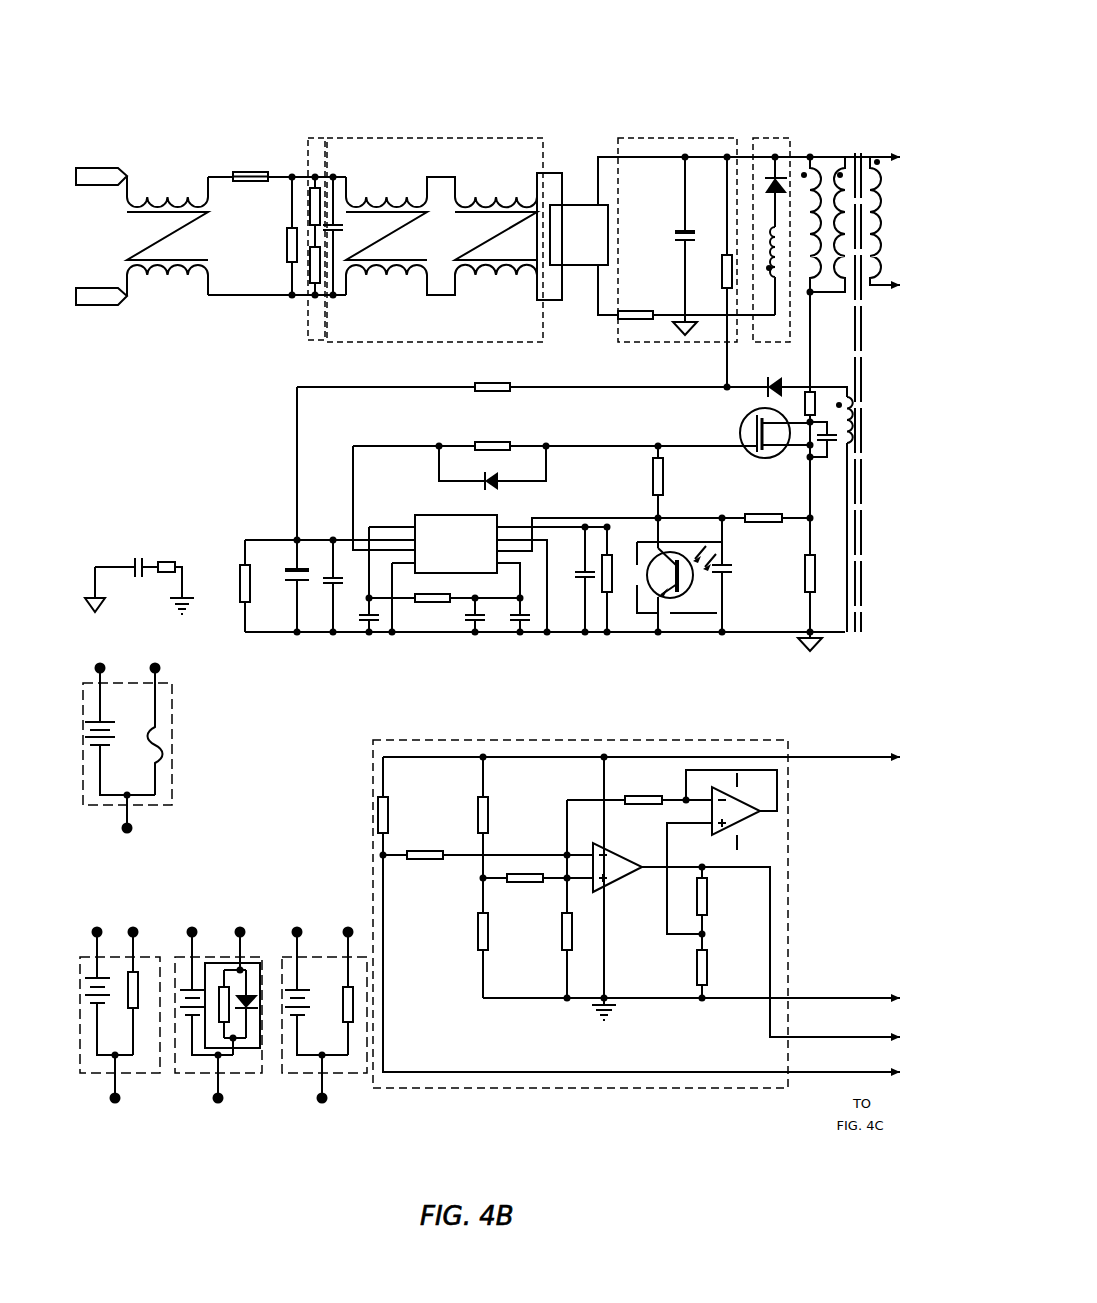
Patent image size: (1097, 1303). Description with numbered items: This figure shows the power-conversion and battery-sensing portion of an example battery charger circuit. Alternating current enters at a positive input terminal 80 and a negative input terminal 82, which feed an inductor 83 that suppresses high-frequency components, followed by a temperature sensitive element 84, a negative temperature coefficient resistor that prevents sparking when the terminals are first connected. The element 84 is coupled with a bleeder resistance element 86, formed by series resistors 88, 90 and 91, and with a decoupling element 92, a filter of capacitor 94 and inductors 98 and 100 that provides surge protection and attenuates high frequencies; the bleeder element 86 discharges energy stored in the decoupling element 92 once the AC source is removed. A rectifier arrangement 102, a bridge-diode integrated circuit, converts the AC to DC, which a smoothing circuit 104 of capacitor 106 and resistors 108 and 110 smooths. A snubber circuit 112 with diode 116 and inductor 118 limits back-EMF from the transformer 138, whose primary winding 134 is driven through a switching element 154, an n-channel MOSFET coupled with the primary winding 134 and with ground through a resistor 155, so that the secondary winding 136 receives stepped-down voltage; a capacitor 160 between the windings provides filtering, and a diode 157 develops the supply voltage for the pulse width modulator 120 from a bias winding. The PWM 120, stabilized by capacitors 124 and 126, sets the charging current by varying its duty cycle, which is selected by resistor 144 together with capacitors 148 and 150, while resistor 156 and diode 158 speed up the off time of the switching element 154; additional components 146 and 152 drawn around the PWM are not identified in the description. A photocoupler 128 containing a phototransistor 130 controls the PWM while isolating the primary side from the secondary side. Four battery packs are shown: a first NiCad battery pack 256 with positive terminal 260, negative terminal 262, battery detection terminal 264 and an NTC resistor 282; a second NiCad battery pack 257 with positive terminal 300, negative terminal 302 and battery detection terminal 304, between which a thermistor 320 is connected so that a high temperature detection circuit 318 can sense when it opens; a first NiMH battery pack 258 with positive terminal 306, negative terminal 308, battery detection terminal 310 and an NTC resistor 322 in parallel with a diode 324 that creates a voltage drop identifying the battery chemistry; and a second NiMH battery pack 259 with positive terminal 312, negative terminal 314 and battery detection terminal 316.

The positive input terminal 80 is at (100, 168).
The negative input terminal 82 is at (100, 288).
The inductor 83 is at (178, 197).
The temperature sensitive element 84 is at (250, 172).
The bleeder resistance element 86 is at (315, 138).
The resistor 88 is at (310, 205).
The resistor 90 is at (310, 272).
The resistor 91 is at (287, 245).
The decoupling element 92 is at (444, 208).
The capacitor 94 is at (343, 232).
The inductor 98 is at (392, 197).
The inductor 100 is at (510, 197).
The rectifier arrangement 102 is at (580, 205).
The smoothing circuit 104 is at (670, 231).
The capacitor 106 is at (672, 232).
The resistor 108 is at (722, 265).
The resistor 110 is at (637, 311).
The snubber circuit 112 is at (736, 204).
The diode 116 is at (771, 178).
The inductor 118 is at (770, 250).
The pulse width modulator 120 is at (420, 515).
The capacitor 124 is at (295, 568).
The capacitor 126 is at (330, 585).
The photocoupler 128 is at (722, 553).
The phototransistor 130 is at (668, 550).
The primary winding 134 is at (810, 156).
The secondary winding 136 is at (877, 156).
The transformer 138 is at (855, 156).
The resistor 144 is at (432, 602).
The resistor 146 is at (612, 565).
The capacitor 148 is at (366, 620).
The capacitor 150 is at (520, 620).
The capacitor 152 is at (590, 580).
The switching element 154 is at (740, 433).
The resistor 155 is at (805, 575).
The resistor 156 is at (492, 442).
The diode 157 is at (786, 385).
The diode 158 is at (500, 483).
The capacitor 160 is at (135, 560).
The first NiCad battery pack 256 is at (100, 1033).
The second NiCad battery pack 257 is at (132, 745).
The first NiMH battery pack 258 is at (225, 1023).
The second NiMH battery pack 259 is at (348, 1012).
The positive terminal 260 is at (95, 929).
The negative terminal 262 is at (110, 1102).
The battery detection terminal 264 is at (135, 929).
The NTC resistor 282 is at (128, 1000).
The positive terminal 300 is at (97, 665).
The negative terminal 302 is at (122, 826).
The battery detection terminal 304 is at (154, 663).
The positive terminal 306 is at (192, 928).
The negative terminal 308 is at (223, 1102).
The battery detection terminal 310 is at (240, 928).
The positive terminal 312 is at (298, 928).
The negative terminal 314 is at (326, 1100).
The battery detection terminal 316 is at (348, 928).
The high temperature detection circuit 318 is at (580, 1090).
The thermistor 320 is at (162, 742).
The NTC resistor 322 is at (230, 1017).
The diode 324 is at (260, 1000).